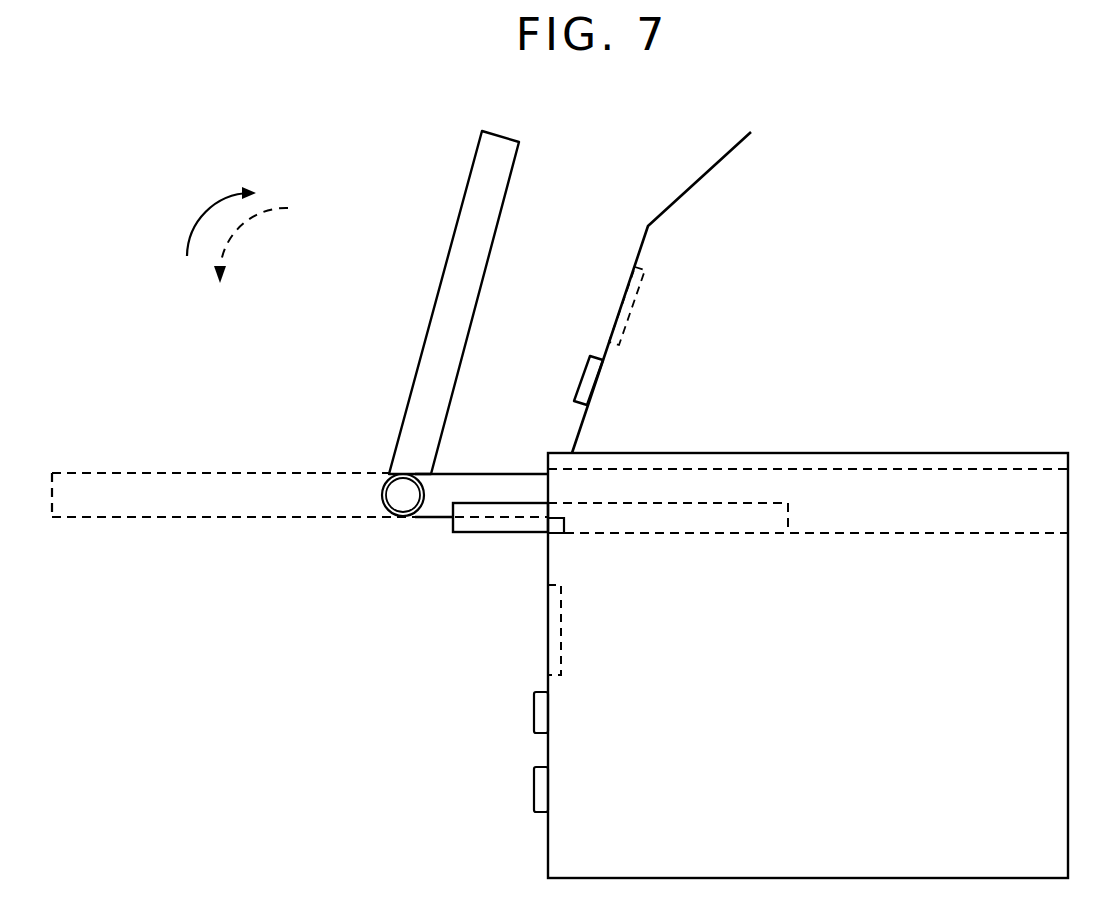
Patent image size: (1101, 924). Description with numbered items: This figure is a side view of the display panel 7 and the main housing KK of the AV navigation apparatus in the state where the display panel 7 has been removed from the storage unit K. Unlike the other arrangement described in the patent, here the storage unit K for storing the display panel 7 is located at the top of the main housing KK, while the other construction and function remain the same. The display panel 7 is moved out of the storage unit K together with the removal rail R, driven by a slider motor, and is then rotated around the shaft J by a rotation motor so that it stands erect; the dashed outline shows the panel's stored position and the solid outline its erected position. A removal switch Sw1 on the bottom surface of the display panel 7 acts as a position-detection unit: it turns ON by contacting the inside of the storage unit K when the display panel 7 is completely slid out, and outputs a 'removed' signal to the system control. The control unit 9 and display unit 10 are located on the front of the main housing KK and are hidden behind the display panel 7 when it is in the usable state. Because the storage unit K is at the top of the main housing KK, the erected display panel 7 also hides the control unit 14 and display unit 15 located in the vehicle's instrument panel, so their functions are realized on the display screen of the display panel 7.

The display panel 7 is at (505, 136).
The control unit 9 is at (540, 785).
The display unit 10 is at (548, 627).
The control unit 14 is at (584, 375).
The display unit 15 is at (627, 302).
The shaft J is at (400, 518).
The removal rail R is at (503, 528).
The removal switch Sw1 is at (558, 534).
The storage unit K is at (855, 535).
The main housing KK is at (788, 453).